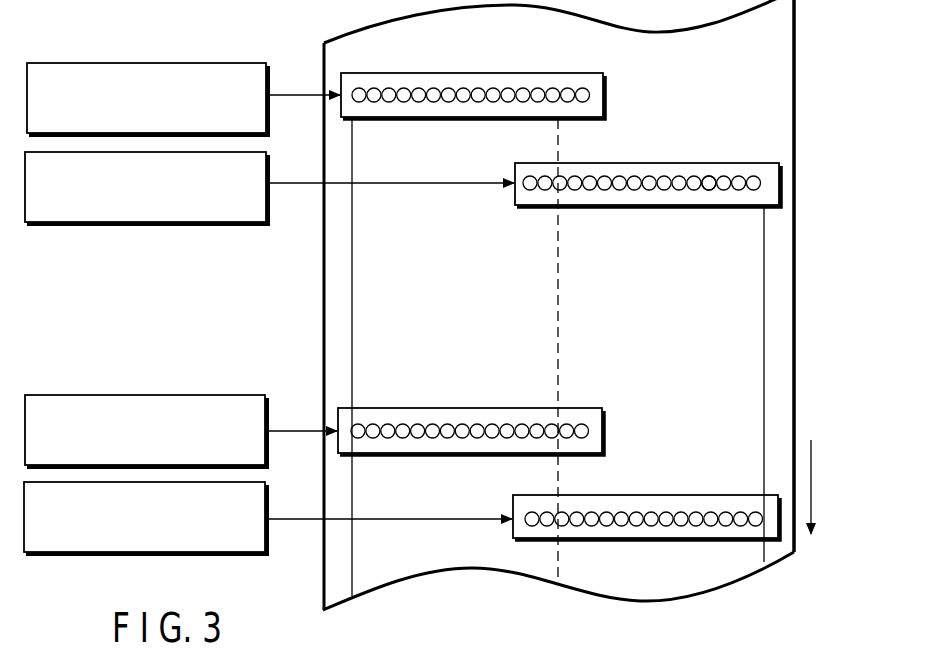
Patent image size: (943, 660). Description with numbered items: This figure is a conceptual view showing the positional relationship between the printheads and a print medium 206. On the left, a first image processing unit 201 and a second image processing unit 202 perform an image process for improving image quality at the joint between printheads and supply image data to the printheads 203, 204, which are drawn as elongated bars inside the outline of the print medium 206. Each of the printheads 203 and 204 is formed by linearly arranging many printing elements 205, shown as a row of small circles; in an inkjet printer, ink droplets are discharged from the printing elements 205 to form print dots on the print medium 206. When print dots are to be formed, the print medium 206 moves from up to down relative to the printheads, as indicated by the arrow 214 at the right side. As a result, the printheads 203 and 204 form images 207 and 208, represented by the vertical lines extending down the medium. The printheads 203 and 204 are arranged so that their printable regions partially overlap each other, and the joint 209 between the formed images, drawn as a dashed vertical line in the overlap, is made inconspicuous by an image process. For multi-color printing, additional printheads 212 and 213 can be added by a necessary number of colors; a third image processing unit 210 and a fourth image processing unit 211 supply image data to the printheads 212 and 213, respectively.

The first image processing unit 201 is at (67, 67).
The second image processing unit 202 is at (70, 226).
The printhead 203 is at (521, 73).
The printhead 204 is at (709, 163).
The printing element 205 is at (711, 190).
The print medium 206 is at (796, 52).
The image 207 is at (373, 322).
The image 208 is at (740, 297).
The joint 209 is at (560, 336).
The third image processing unit 210 is at (65, 400).
The fourth image processing unit 211 is at (68, 556).
The printhead 212 is at (485, 408).
The printhead 213 is at (688, 495).
The arrow 214 is at (813, 490).